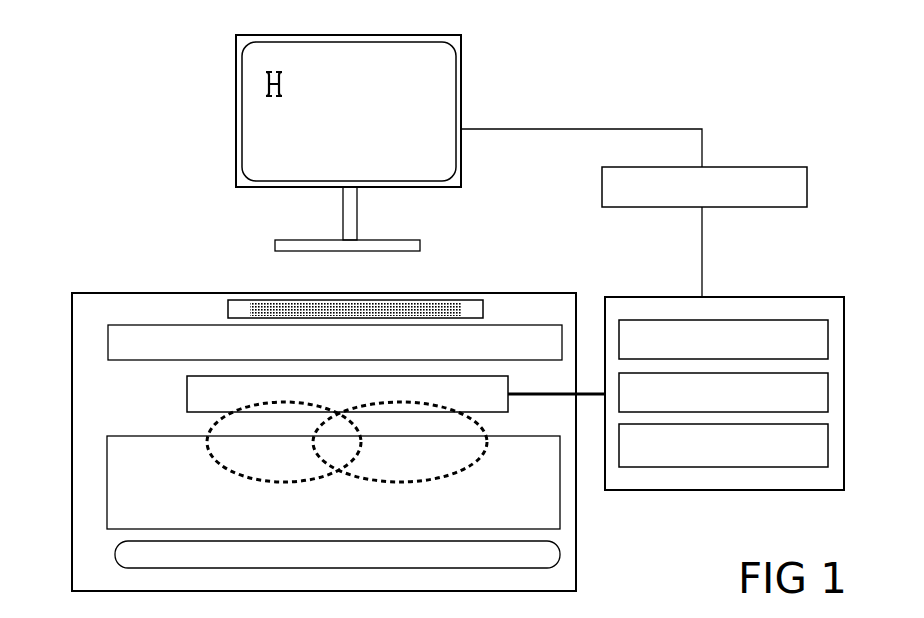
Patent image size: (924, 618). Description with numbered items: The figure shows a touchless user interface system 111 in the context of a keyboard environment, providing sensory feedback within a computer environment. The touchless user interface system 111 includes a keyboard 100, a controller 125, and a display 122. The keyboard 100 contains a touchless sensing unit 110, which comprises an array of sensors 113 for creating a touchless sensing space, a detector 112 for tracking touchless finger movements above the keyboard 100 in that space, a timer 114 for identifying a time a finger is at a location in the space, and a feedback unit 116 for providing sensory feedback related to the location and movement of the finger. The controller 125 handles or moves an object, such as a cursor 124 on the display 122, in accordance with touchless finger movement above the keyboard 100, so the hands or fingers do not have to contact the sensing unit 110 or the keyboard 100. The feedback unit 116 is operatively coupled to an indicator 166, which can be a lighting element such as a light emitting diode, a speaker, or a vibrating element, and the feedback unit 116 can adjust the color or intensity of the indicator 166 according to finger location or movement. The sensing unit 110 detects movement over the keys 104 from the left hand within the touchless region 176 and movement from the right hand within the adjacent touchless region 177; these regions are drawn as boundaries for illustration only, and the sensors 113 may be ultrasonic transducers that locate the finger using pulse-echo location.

The keyboard 100 is at (125, 293).
The keys 104 is at (560, 518).
The touchless sensing unit 110 is at (810, 292).
The touchless user interface system 111 is at (671, 46).
The detector 112 is at (828, 438).
The sensors 113 is at (187, 393).
The timer 114 is at (828, 392).
The feedback unit 116 is at (828, 341).
The display 122 is at (461, 190).
The cursor 124 is at (277, 114).
The controller 125 is at (762, 167).
The indicator 166 is at (228, 310).
The touchless region 176 is at (282, 488).
The right sensing zone 177 is at (415, 487).